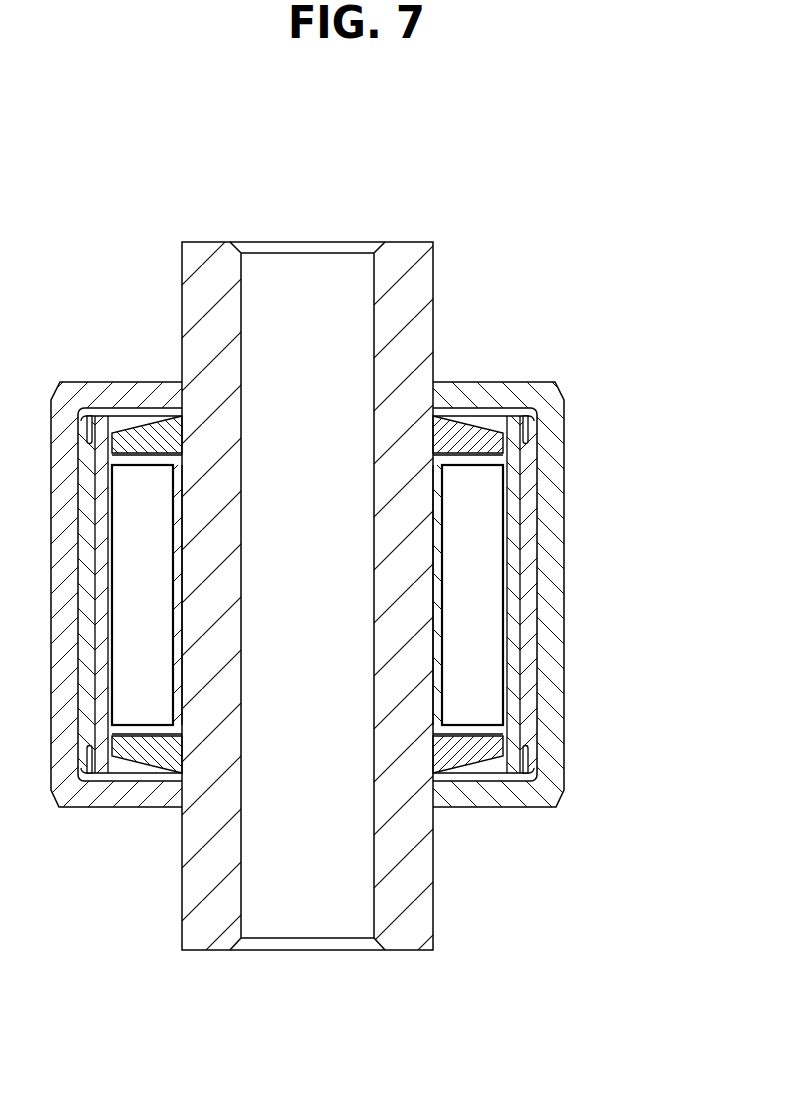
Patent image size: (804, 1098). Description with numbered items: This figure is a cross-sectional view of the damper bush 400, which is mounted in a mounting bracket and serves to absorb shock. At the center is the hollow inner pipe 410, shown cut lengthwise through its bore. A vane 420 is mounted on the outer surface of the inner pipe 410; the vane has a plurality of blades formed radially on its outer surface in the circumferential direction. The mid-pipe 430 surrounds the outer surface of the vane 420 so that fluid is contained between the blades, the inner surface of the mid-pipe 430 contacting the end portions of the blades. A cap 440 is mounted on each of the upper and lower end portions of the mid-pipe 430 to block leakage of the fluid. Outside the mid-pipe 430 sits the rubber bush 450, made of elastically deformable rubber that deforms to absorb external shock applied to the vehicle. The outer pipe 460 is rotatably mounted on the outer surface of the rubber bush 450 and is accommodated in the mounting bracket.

The damper bush 400 is at (644, 129).
The inner pipe 410 is at (413, 887).
The vane 420 is at (483, 683).
The mid-pipe 430 is at (513, 481).
The cap 440 is at (467, 437).
The rubber bush 450 is at (530, 555).
The outer pipe 460 is at (558, 625).